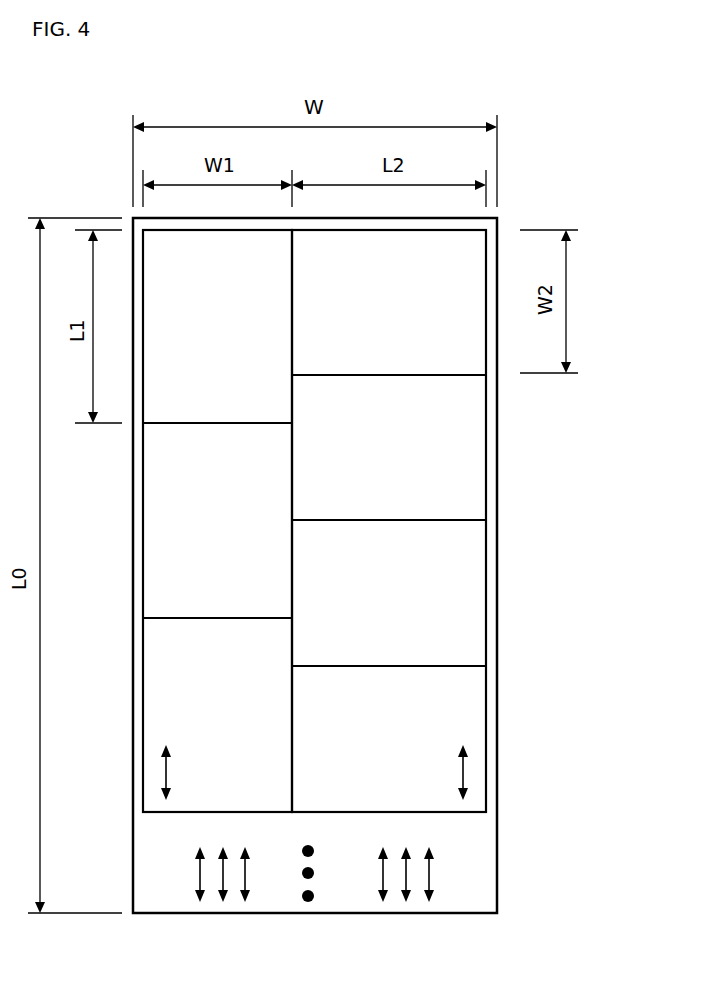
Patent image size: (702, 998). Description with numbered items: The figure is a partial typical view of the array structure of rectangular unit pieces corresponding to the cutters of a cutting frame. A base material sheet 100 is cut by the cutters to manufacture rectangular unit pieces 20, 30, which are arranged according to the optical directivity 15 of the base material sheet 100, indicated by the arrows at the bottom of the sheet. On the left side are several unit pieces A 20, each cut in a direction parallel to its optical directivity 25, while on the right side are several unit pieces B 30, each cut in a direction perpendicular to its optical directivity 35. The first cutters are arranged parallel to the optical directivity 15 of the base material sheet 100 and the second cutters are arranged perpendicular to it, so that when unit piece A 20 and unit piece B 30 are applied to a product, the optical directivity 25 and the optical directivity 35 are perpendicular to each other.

The base material sheet 100 is at (478, 865).
The unit piece A 20 is at (165, 572).
The unit piece B 30 is at (463, 605).
The optical directivity 25 is at (165, 773).
The optical directivity 35 is at (463, 771).
The optical directivity 15 is at (403, 903).